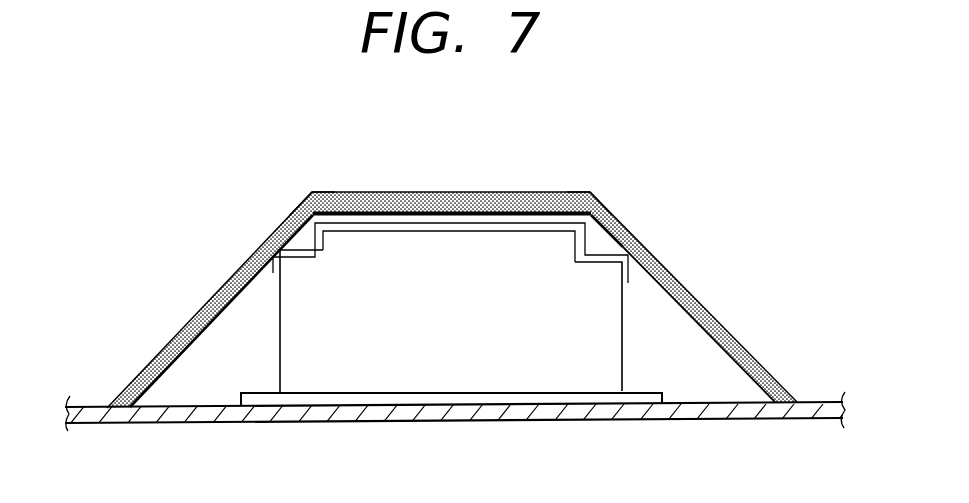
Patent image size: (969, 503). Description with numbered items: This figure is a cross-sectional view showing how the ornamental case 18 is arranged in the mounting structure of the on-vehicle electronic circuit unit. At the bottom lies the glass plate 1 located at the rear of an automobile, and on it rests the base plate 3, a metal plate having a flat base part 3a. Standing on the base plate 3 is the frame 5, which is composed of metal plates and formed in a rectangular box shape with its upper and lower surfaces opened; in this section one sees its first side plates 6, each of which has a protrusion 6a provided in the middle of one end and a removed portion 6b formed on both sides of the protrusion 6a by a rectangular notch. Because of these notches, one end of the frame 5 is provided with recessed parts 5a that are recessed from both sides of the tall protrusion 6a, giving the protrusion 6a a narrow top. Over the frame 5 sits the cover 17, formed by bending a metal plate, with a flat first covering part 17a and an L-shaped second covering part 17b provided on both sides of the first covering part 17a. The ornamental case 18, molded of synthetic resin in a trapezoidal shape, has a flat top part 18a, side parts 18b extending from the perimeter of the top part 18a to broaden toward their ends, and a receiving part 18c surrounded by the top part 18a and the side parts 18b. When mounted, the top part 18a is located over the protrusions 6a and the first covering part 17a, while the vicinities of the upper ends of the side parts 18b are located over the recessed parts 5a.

The glass plate 1 is at (717, 408).
The base plate 3 is at (241, 393).
The base part 3a is at (638, 390).
The frame 5 is at (301, 326).
The recessed part 5a is at (289, 248).
The first side plate 6 is at (445, 367).
The protrusion 6a is at (468, 231).
The removed portion 6b is at (303, 268).
The cover 17 is at (510, 198).
The first covering part 17a is at (416, 212).
The second covering part 17b is at (322, 252).
The ornamental case 18 is at (426, 255).
The top part 18a is at (360, 192).
The side part 18b is at (157, 350).
The receiving part 18c is at (663, 318).